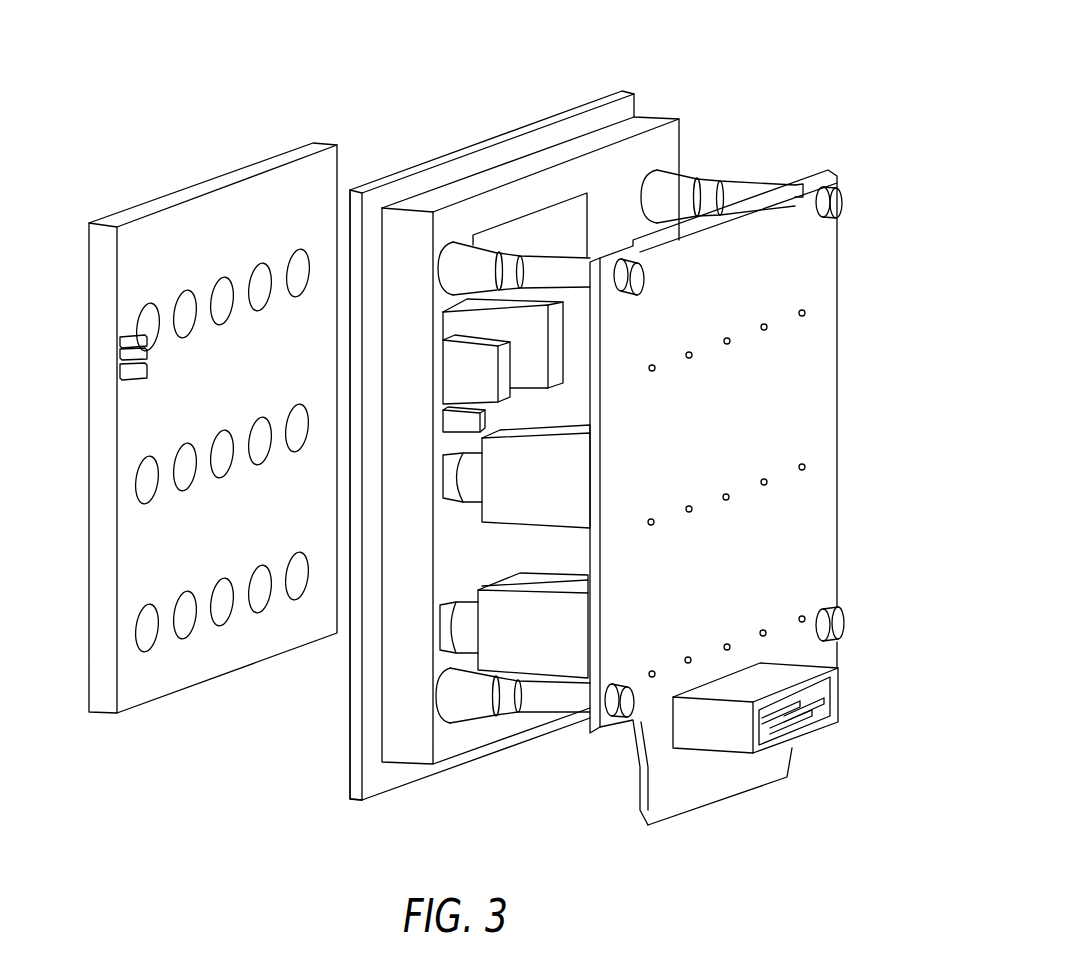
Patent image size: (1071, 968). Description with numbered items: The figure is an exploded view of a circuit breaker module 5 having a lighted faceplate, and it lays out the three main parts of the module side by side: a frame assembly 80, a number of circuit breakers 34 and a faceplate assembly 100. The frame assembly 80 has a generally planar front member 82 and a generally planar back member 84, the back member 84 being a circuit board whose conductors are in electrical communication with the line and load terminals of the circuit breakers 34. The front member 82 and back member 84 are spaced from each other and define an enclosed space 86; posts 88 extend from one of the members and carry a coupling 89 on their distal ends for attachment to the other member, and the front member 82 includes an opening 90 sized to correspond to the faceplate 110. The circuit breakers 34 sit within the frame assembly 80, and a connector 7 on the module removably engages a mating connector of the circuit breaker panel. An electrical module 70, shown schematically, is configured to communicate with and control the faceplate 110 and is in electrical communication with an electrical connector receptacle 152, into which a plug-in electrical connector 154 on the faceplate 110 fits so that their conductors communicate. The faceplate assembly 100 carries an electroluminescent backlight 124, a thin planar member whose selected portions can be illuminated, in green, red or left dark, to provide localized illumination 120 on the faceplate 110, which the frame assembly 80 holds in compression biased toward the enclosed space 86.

The circuit breaker module 5 is at (684, 48).
The connector 7 is at (820, 728).
The circuit breaker 34 is at (537, 325).
The electrical module 70 is at (485, 422).
The frame assembly 80 is at (432, 160).
The front member 82 is at (352, 738).
The back member 84 is at (842, 368).
The enclosed space 86 is at (462, 562).
The post 88 is at (710, 187).
The coupling 89 is at (840, 197).
The opening 90 is at (565, 222).
The faceplate assembly 100 is at (198, 683).
The faceplate 110 is at (210, 198).
The localized illumination 120 is at (147, 407).
The electroluminescent backlight 124 is at (137, 567).
The electrical connector receptacle 152 is at (463, 367).
The plug-in electrical connector 154 is at (123, 337).